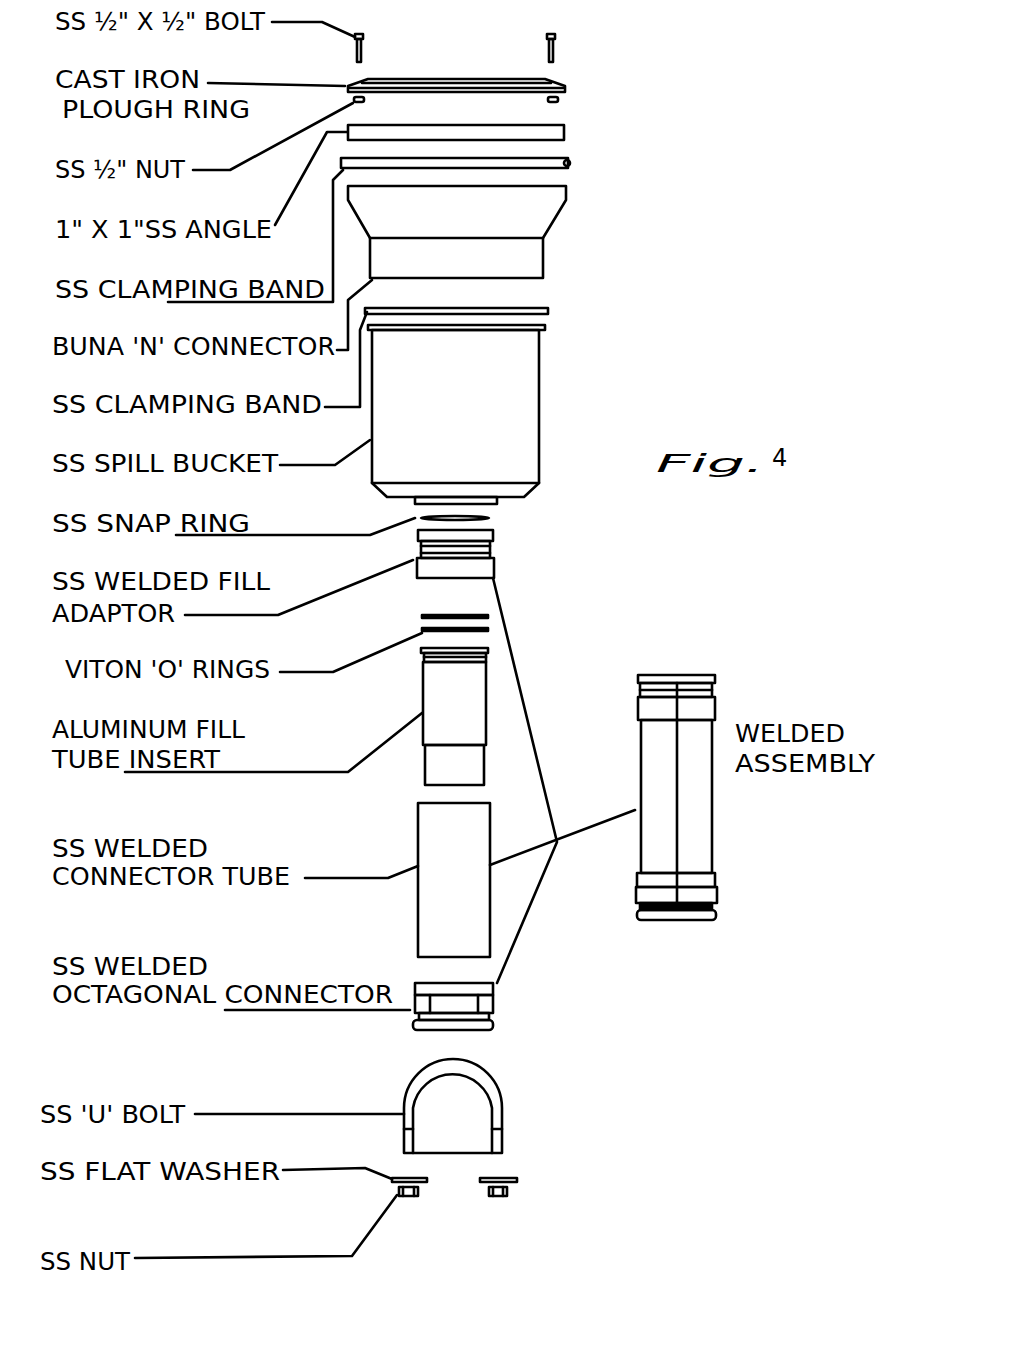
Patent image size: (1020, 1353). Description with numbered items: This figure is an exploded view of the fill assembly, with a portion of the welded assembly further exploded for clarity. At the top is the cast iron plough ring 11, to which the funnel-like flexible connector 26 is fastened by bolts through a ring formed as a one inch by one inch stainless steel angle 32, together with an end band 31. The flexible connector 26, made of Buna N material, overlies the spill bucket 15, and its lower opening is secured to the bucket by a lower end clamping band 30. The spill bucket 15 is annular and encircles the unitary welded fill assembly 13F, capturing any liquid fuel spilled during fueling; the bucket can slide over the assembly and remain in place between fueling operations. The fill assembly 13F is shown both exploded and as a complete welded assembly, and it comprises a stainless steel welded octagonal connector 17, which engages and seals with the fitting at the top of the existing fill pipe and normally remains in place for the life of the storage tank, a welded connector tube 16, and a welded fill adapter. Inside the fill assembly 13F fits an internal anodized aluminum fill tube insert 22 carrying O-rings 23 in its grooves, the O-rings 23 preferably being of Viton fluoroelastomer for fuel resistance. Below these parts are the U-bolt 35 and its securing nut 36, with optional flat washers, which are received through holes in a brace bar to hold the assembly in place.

The plough ring 11 is at (560, 87).
The 1 inch by 1 inch angle 32 is at (565, 133).
The end band 31 is at (570, 160).
The flexible connector 26 is at (564, 226).
The lower end clamping band 30 is at (548, 308).
The spill bucket 15 is at (545, 420).
The fill assembly 13F is at (495, 538).
The O-rings 23 is at (422, 624).
The aluminum fill tube insert 22 is at (422, 685).
The welded connector tube 16 is at (418, 828).
The welded octagonal connector 17 is at (495, 1003).
The U-bolt 35 is at (500, 1090).
The securing nut 36 is at (510, 1190).